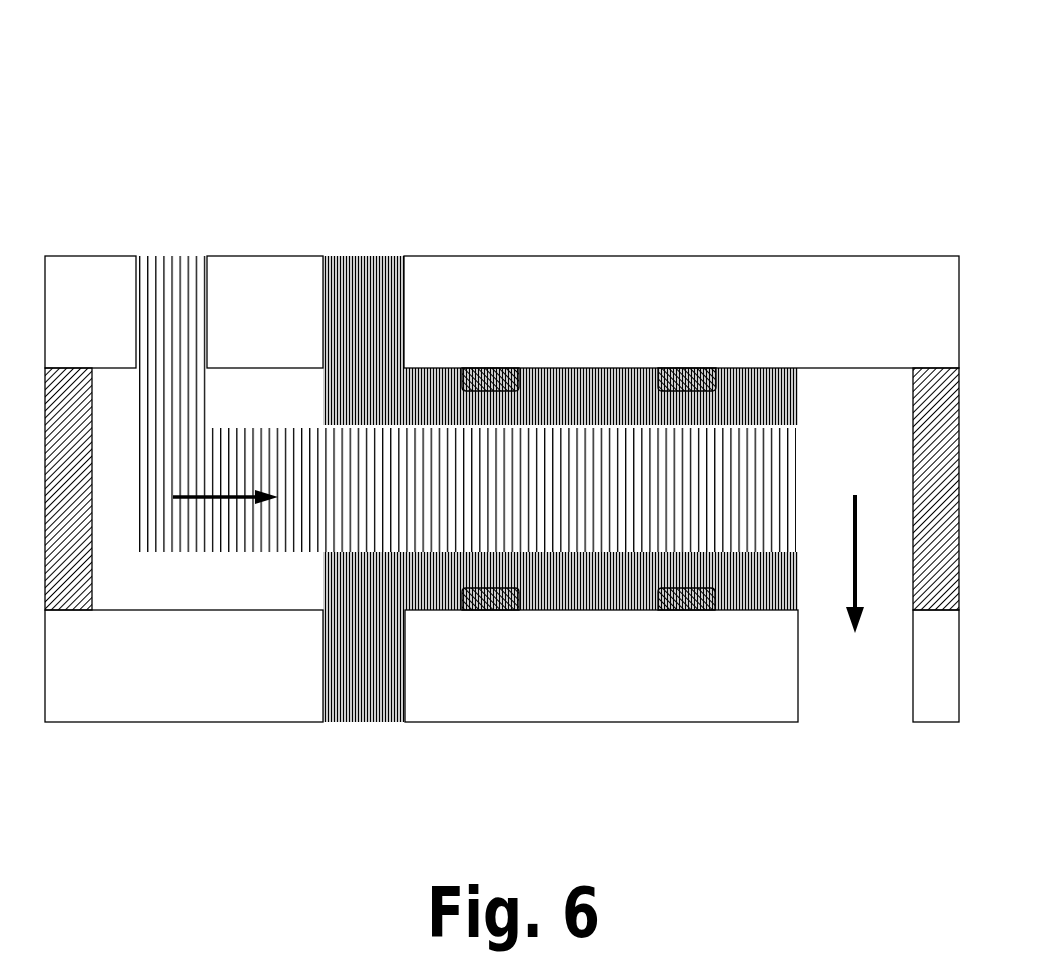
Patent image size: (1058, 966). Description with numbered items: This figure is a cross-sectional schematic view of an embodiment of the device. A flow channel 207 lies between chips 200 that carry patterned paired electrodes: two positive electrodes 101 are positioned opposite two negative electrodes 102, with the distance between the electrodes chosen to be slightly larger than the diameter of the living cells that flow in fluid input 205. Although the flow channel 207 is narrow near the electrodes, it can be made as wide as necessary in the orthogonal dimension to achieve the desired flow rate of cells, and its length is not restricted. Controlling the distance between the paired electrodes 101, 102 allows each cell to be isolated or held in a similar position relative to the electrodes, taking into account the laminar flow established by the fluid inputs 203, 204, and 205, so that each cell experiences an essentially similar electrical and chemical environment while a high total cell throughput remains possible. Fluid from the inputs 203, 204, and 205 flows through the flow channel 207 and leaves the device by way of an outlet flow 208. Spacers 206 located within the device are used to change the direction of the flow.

The positive electrodes 101 is at (690, 377).
The negative electrodes 102 is at (688, 602).
The chips 200 is at (810, 287).
The fluid input 203 is at (368, 623).
The fluid input 204 is at (382, 320).
The fluid input 205 is at (173, 287).
The spacers 206 is at (80, 588).
The flow channel 207 is at (142, 455).
The outlet flow 208 is at (843, 584).